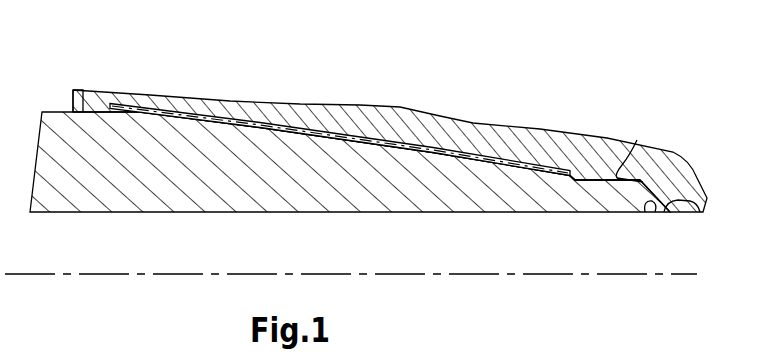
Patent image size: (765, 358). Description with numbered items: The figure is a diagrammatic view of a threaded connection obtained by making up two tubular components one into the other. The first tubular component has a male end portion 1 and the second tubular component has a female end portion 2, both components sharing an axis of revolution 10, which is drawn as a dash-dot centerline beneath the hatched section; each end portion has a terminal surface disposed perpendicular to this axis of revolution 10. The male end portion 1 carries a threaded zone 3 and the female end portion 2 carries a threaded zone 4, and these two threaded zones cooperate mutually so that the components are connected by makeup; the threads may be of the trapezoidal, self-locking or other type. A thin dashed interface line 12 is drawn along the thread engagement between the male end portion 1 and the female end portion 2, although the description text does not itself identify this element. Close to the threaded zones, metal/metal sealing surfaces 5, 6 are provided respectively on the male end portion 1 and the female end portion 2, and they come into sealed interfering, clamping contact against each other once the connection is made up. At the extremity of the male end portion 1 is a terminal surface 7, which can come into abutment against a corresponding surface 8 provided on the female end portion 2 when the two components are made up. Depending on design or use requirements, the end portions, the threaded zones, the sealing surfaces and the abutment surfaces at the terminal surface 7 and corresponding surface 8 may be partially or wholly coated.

The male end portion 1 is at (112, 173).
The female end portion 2 is at (83, 92).
The threaded zone 3 is at (213, 130).
The threaded zone 4 is at (262, 118).
The metal/metal sealing surface 5 is at (593, 190).
The metal/metal sealing surface 6 is at (620, 170).
The terminal surface 7 is at (652, 214).
The corresponding surface 8 is at (686, 208).
The axis of revolution 10 is at (627, 275).
The interface line 12 is at (427, 146).